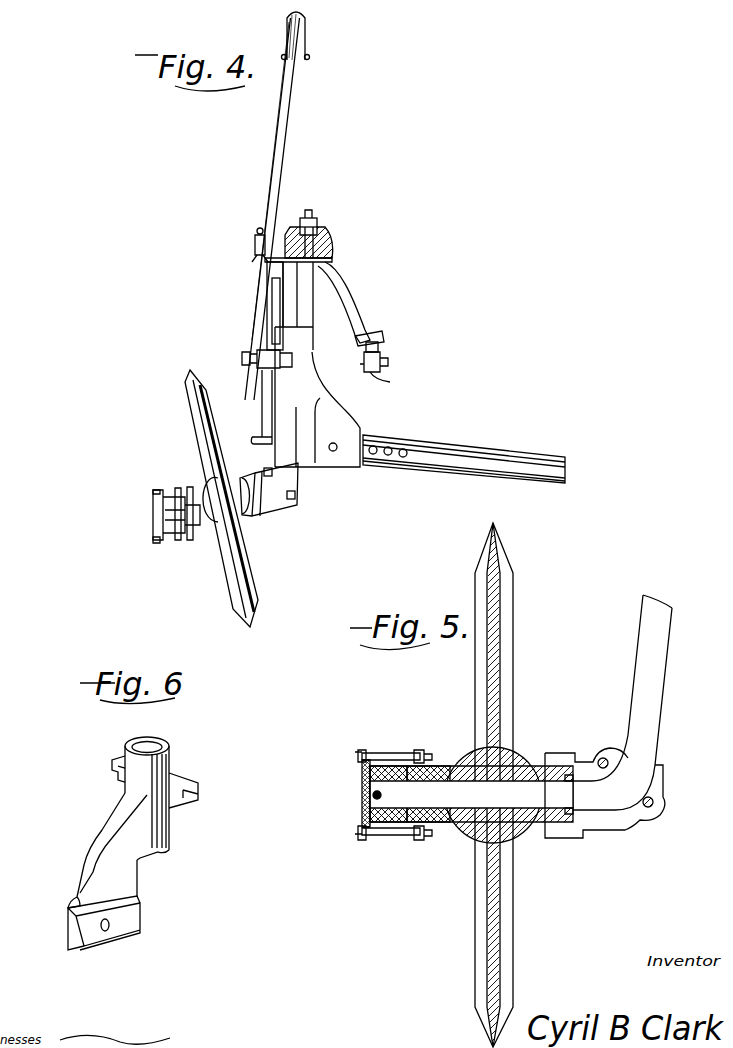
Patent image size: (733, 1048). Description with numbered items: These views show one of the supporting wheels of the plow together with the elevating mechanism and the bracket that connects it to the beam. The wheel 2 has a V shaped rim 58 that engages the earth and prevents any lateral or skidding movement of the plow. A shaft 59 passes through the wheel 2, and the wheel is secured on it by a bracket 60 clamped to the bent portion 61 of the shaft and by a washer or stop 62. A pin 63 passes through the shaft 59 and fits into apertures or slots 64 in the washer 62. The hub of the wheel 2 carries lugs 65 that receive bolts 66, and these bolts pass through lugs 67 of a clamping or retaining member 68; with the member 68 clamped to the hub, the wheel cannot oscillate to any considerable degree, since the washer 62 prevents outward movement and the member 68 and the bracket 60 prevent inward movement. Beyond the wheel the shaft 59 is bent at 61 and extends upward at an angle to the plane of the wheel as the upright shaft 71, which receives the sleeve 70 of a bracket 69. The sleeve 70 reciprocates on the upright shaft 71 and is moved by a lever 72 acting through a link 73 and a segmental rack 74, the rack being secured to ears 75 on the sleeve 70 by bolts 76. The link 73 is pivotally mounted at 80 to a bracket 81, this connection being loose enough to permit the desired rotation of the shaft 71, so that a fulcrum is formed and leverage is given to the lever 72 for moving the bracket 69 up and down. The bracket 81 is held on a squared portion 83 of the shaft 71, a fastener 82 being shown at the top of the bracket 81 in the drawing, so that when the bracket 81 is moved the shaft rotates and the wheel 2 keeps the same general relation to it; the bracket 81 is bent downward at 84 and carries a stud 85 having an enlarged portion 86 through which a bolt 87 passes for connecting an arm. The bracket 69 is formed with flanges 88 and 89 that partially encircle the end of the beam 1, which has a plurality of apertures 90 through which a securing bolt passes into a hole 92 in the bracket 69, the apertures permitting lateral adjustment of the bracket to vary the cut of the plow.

In FIG. 4, the beam 1 is at (470, 462).
In FIG. 4, the wheel 2 is at (260, 582).
In FIG. 5, the wheel 2 is at (515, 903).
In FIG. 5, the V shaped rim 58 is at (442, 1036).
In FIG. 5, the shaft 59 is at (471, 794).
In FIG. 4, the bracket 60 is at (278, 500).
In FIG. 5, the bracket 60 is at (637, 832).
In FIG. 5, the bent portion 61 is at (655, 778).
In FIG. 5, the washer or stop 62 is at (362, 773).
In FIG. 5, the pin 63 is at (362, 795).
In FIG. 5, the apertures or slots 64 is at (370, 805).
In FIG. 4, the lugs 65 is at (178, 488).
In FIG. 5, the lugs 65 is at (428, 740).
In FIG. 4, the bolts 66 is at (182, 540).
In FIG. 5, the bolts 66 is at (392, 750).
In FIG. 4, the lugs 67 is at (160, 544).
In FIG. 5, the lugs 67 is at (365, 750).
In FIG. 4, the clamping or retaining member 68 is at (158, 522).
In FIG. 5, the clamping or retaining member 68 is at (362, 760).
In FIG. 4, the bracket 69 is at (330, 395).
In FIG. 6, the bracket 69 is at (120, 875).
In FIG. 4, the sleeve 70 is at (294, 397).
In FIG. 6, the sleeve 70 is at (172, 760).
In FIG. 4, the upright shaft 71 is at (313, 318).
In FIG. 5, the upright shaft 71 is at (655, 713).
In FIG. 4, the lever 72 is at (280, 117).
In FIG. 4, the link 73 is at (266, 316).
In FIG. 4, the segmental rack 74 is at (260, 430).
In FIG. 6, the ears 75 is at (112, 776).
In FIG. 4, the bolts 76 is at (272, 377).
In FIG. 4, the pivot connection 80 is at (270, 236).
In FIG. 4, the bracket 81 is at (325, 244).
In FIG. 4, the screw 82 is at (309, 222).
In FIG. 4, the squared portion 83 is at (320, 252).
In FIG. 4, the downward bend 84 is at (360, 320).
In FIG. 4, the stud 85 is at (380, 336).
In FIG. 4, the enlarged portion 86 is at (390, 382).
In FIG. 4, the bolt 87 is at (396, 350).
In FIG. 6, the flange 88 is at (72, 904).
In FIG. 6, the flange 89 is at (108, 950).
In FIG. 4, the apertures 90 is at (388, 456).
In FIG. 4, the aperture or hole 92 is at (333, 451).
In FIG. 6, the aperture or hole 92 is at (100, 925).